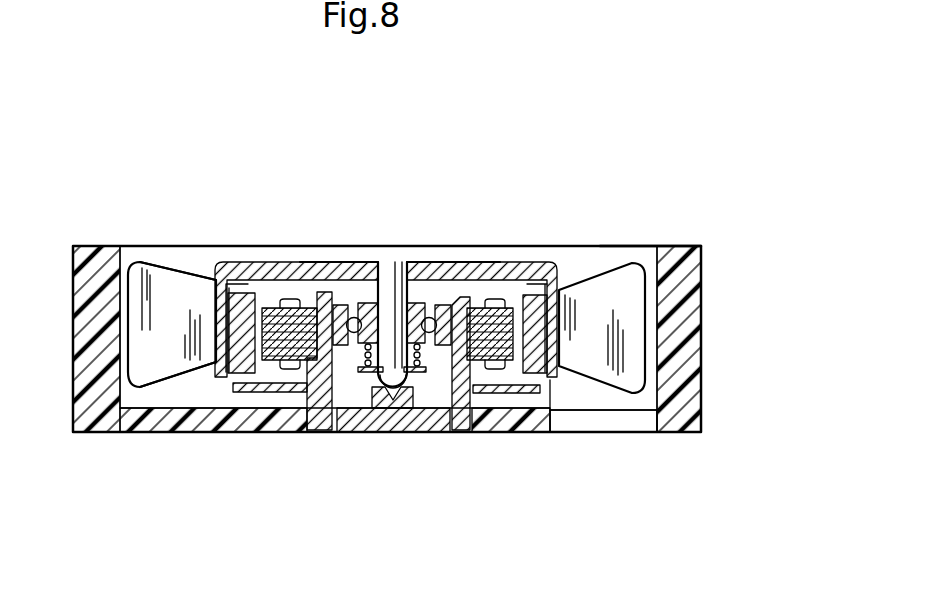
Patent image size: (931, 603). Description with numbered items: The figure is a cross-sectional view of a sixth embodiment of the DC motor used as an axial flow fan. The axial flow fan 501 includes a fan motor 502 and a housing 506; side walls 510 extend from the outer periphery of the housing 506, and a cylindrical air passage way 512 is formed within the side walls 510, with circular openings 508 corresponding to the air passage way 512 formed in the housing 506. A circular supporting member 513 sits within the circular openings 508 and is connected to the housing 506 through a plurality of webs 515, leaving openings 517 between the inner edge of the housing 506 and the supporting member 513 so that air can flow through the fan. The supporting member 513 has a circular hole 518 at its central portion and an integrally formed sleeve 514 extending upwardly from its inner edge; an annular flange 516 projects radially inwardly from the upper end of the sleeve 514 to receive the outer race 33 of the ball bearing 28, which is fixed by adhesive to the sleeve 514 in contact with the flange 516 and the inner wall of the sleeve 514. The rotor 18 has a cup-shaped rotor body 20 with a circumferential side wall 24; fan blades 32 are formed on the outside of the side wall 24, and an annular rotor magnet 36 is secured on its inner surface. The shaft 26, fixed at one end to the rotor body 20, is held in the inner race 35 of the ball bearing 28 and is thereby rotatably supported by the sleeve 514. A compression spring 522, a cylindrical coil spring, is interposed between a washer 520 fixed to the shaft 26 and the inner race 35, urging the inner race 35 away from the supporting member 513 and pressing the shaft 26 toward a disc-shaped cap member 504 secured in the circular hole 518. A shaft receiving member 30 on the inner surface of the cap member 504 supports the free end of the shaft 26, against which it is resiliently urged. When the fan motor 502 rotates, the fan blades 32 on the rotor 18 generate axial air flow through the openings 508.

The rotor 18 is at (581, 272).
The rotor body 20 is at (211, 256).
The circumferential side wall 24 is at (560, 326).
The shaft 26 is at (390, 262).
The ball bearing 28 is at (423, 301).
The shaft receiving member 30 is at (400, 409).
The fan blades 32 is at (170, 373).
The outer race 33 is at (322, 290).
The inner race 35 is at (366, 292).
The rotor magnet 36 is at (217, 312).
The axial flow fan 501 is at (711, 436).
The fan motor 502 is at (533, 259).
The cap member 504 is at (421, 406).
The housing 506 is at (116, 443).
The circular openings 508 is at (656, 426).
The side walls 510 is at (690, 342).
The air passage way 512 is at (660, 262).
The supporting member 513 is at (508, 420).
The sleeve 514 is at (457, 297).
The webs 515 is at (218, 420).
The annular flange 516 is at (337, 301).
The openings 517 is at (585, 420).
The circular hole 518 is at (440, 413).
The washer 520 is at (352, 409).
The compression spring 522 is at (366, 352).